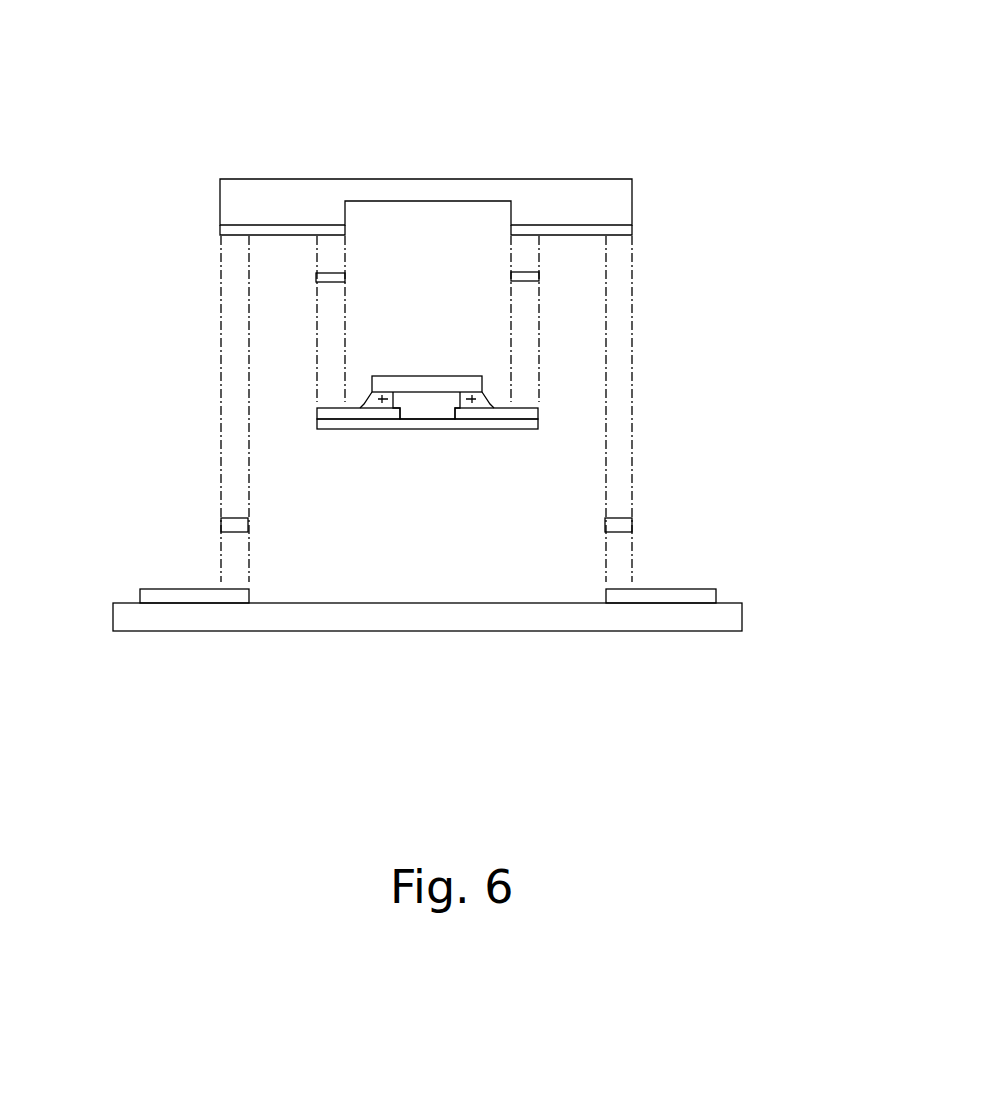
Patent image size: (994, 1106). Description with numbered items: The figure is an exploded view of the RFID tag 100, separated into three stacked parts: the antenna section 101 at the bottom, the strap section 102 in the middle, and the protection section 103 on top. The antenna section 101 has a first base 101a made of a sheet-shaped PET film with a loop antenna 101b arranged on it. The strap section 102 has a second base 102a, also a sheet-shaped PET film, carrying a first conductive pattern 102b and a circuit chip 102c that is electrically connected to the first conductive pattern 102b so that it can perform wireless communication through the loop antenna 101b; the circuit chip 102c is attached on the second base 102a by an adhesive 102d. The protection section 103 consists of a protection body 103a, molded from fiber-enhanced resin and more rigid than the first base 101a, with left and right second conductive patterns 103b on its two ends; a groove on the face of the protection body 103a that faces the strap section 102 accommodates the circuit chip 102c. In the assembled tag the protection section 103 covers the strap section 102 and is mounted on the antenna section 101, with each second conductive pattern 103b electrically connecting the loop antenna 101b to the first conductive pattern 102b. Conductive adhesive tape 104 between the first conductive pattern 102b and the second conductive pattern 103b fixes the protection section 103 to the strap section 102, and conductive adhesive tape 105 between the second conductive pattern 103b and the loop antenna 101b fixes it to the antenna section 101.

The RFID tag 100 is at (486, 122).
The antenna section 101 is at (516, 588).
The first base 101a is at (742, 620).
The loop antenna 101b is at (716, 597).
The strap section 102 is at (434, 535).
The second base 102a is at (337, 422).
The first conductive pattern 102b is at (375, 412).
The circuit chip 102c is at (435, 385).
The adhesive 102d is at (438, 410).
The protection section 103 is at (333, 180).
The protection body 103a is at (220, 200).
The second conductive pattern 103b is at (220, 228).
The conductive adhesive tape 104 is at (316, 277).
The conductive adhesive tape 105 is at (221, 525).